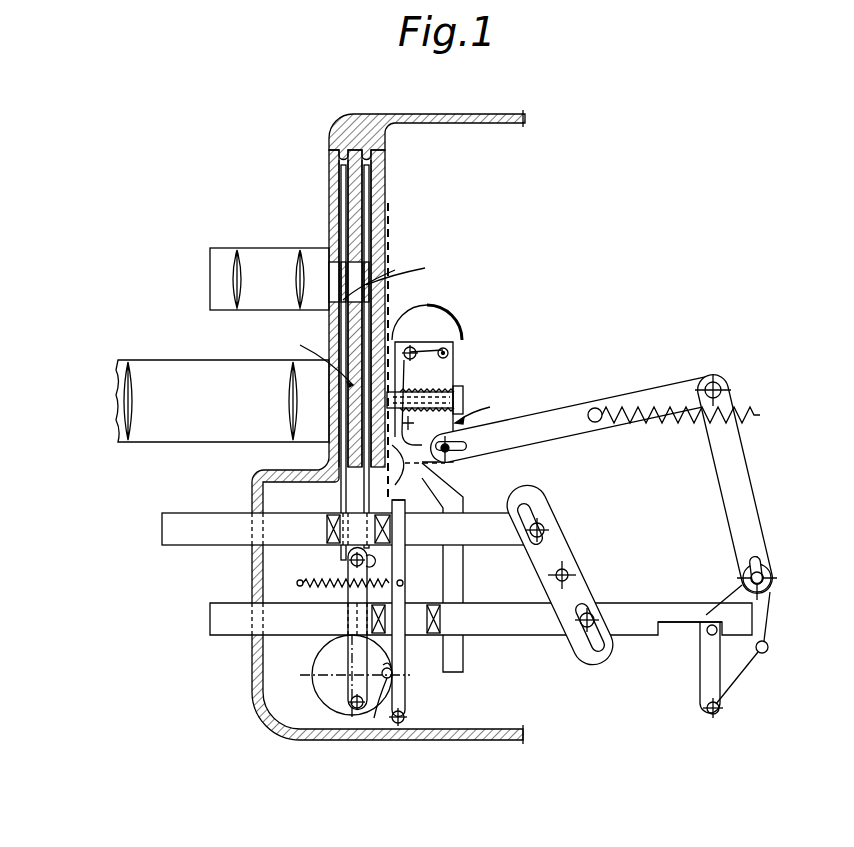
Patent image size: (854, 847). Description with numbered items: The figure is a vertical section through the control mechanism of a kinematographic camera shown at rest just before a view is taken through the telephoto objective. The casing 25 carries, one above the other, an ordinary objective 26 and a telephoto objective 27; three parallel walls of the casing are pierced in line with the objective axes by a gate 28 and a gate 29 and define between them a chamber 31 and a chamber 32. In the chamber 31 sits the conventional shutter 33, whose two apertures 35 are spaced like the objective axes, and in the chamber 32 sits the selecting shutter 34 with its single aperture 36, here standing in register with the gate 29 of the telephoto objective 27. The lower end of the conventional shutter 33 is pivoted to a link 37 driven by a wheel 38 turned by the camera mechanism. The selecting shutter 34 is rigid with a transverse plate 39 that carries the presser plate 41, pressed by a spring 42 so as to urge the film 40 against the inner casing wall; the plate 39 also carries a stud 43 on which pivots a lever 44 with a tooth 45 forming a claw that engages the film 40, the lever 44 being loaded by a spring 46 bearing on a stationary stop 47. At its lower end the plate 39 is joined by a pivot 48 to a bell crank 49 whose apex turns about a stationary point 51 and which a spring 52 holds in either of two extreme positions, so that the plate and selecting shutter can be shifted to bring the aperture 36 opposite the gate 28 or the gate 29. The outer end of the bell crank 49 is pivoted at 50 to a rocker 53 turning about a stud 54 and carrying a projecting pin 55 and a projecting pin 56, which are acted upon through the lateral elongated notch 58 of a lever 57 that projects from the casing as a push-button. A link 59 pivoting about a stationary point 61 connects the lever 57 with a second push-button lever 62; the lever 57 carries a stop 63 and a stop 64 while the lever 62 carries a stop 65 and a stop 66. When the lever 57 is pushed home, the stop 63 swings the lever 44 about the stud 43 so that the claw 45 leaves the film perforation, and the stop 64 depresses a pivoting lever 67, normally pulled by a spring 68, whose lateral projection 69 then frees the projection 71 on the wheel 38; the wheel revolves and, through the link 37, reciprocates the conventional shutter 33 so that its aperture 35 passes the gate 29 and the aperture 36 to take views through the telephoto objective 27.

The casing 25 is at (361, 114).
The ordinary objective 26 is at (266, 256).
The telephoto objective 27 is at (207, 370).
The gate 28 is at (393, 278).
The gate 29 is at (319, 357).
The chamber 31 is at (343, 190).
The chamber 32 is at (366, 176).
The conventional shutter 33 is at (343, 248).
The selecting shutter 34 is at (366, 250).
The apertures 35 is at (343, 300).
The aperture 36 is at (415, 398).
The link 37 is at (352, 590).
The wheel 38 is at (322, 680).
The transverse plate 39 is at (481, 409).
The film 40 is at (390, 243).
The presser plate 41 is at (438, 304).
The spring 42 is at (465, 400).
The stud 43 is at (413, 349).
The lever 44 is at (415, 372).
The tooth 45 is at (411, 504).
The spring 46 is at (430, 352).
The stationary stop 47 is at (450, 351).
The pivot 48 is at (452, 452).
The bell crank 49 is at (545, 412).
The pivot 50 is at (750, 576).
The stationary point 51 is at (720, 381).
The spring 52 is at (758, 405).
The rocker 53 is at (740, 688).
The stud 54 is at (705, 712).
The projecting pin 55 is at (706, 634).
The projecting pin 56 is at (763, 655).
The lever 57 is at (198, 605).
The lateral elongated notch 58 is at (676, 624).
The link 59 is at (585, 592).
The stationary point 61 is at (568, 570).
The lever 62 is at (196, 514).
The stop 63 is at (435, 636).
The stop 64 is at (407, 596).
The stop 65 is at (392, 540).
The stop 66 is at (325, 535).
The pivoting lever 67 is at (408, 690).
The spring 68 is at (345, 550).
The lateral projection 69 is at (385, 665).
The projection 71 is at (386, 680).